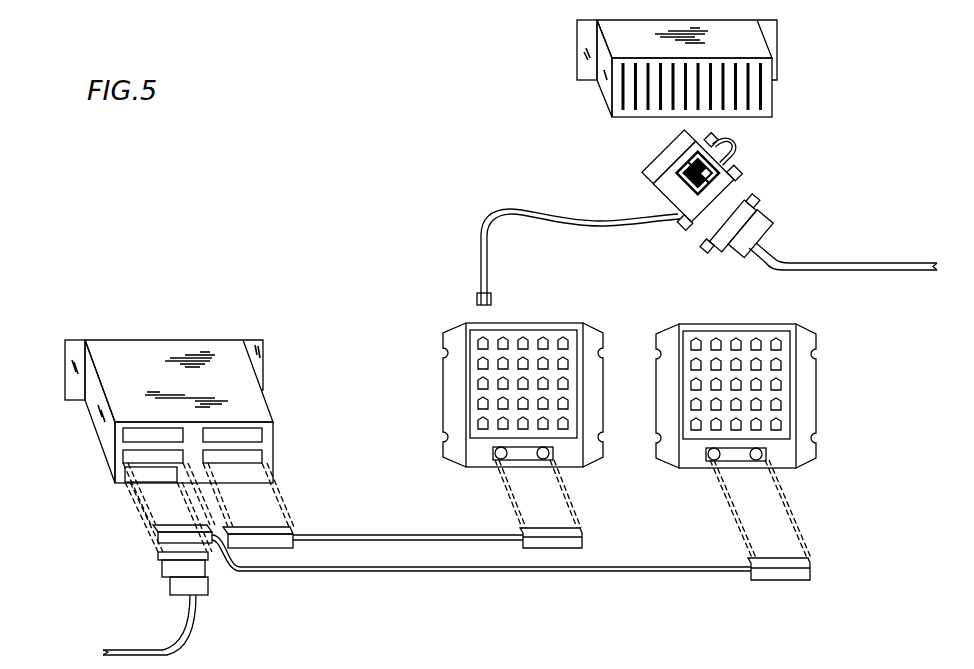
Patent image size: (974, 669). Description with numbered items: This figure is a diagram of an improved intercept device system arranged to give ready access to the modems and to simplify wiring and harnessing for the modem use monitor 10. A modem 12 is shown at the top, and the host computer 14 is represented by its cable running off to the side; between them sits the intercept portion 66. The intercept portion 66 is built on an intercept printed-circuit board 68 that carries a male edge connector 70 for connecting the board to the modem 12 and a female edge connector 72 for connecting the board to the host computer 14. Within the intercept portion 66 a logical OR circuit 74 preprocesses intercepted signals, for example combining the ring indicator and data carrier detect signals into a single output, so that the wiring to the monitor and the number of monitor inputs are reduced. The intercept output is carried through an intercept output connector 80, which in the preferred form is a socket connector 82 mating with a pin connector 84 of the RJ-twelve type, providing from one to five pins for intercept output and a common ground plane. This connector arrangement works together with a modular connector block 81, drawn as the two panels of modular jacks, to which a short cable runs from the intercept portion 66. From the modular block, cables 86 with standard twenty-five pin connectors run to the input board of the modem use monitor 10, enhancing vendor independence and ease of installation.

The modem use monitor 10 is at (114, 340).
The modem 12 is at (622, 91).
The host computer 14 is at (895, 263).
The intercept portion 66 is at (626, 195).
The intercept printed-circuit board 68 is at (740, 188).
The male edge connector 70 is at (647, 165).
The female edge connector 72 is at (702, 210).
The logical OR circuit 74 is at (725, 165).
The intercept output connector 80 is at (733, 139).
The modular connector block 81 is at (604, 380).
The socket connector 82 is at (483, 343).
The pin connector 84 is at (478, 300).
The cables 86 is at (582, 537).